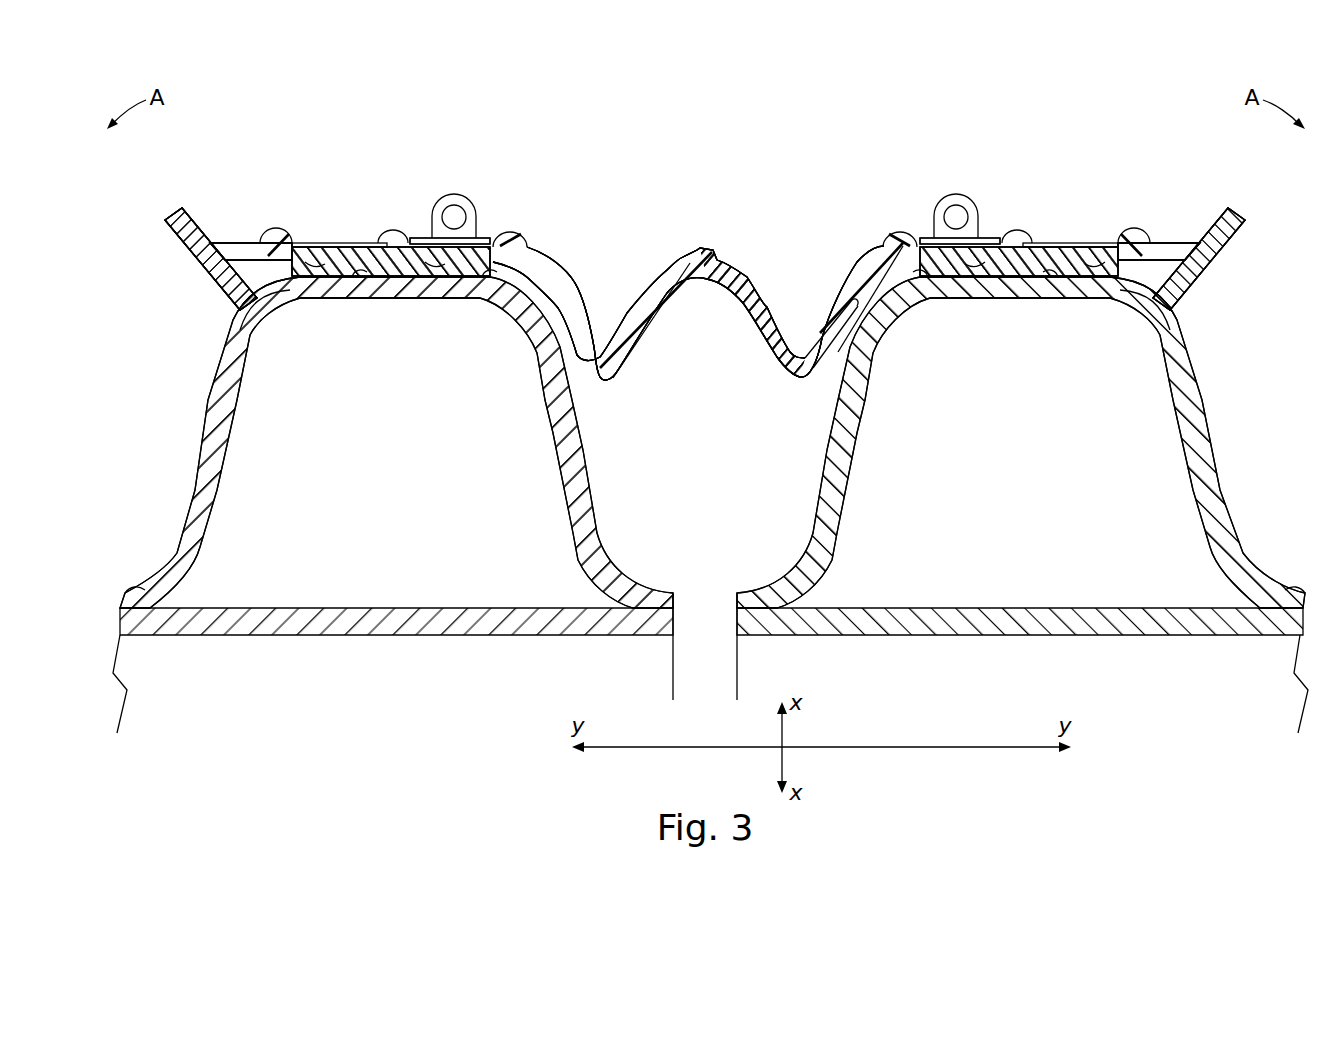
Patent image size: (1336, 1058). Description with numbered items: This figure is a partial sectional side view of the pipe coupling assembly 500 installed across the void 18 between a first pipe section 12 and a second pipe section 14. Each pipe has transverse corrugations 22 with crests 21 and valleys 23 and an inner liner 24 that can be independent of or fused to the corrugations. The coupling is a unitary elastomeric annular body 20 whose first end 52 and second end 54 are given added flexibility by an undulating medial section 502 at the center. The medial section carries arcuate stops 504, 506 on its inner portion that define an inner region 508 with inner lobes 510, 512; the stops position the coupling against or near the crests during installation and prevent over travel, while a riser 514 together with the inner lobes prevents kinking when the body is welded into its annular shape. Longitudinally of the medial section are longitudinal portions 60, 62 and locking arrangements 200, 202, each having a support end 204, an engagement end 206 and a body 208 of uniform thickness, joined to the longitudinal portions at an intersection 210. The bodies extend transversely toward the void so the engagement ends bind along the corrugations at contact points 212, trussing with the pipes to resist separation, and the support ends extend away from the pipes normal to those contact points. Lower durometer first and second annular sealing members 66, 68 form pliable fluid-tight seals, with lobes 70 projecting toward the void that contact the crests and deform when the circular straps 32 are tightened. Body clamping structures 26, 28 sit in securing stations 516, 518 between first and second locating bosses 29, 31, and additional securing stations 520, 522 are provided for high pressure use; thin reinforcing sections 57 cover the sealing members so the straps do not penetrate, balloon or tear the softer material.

The first pipe section 12 is at (158, 422).
The second pipe section 14 is at (1228, 505).
The void 18 is at (691, 695).
The annular body 20 is at (556, 266).
The crest 21 is at (300, 292).
The corrugation 22 is at (587, 441).
The valley 23 is at (162, 573).
The inner liner 24 is at (395, 632).
The body clamping structure 26 is at (454, 195).
The body clamping structure 28 is at (957, 195).
The first locating boss 29 is at (380, 236).
The second locating boss 31 is at (276, 229).
The circular strap 32 is at (490, 238).
The first end 52 is at (172, 218).
The second end 54 is at (214, 297).
The reinforcing section 57 is at (340, 247).
The longitudinal portion 60 is at (252, 243).
The longitudinal portion 62 is at (1160, 243).
The first annular sealing member 66 is at (396, 268).
The second annular sealing member 68 is at (1010, 268).
The lobe 70 is at (358, 282).
The locking arrangement 200 is at (136, 182).
The locking arrangement 202 is at (1274, 182).
The support end 204 is at (183, 206).
The engagement end 206 is at (252, 342).
The body 208 is at (178, 257).
The intersection 210 is at (217, 243).
The contact point 212 is at (258, 312).
The pipe coupling assembly 500 is at (1196, 182).
The undulating medial section 502 is at (760, 290).
The arcuate stop 504 is at (583, 317).
The arcuate stop 506 is at (826, 318).
The inner region 508 is at (688, 507).
The inner lobe 510 is at (600, 381).
The inner lobe 512 is at (806, 381).
The riser 514 is at (657, 286).
The securing station 516 is at (411, 238).
The securing station 518 is at (1003, 238).
The securing station 520 is at (300, 243).
The securing station 522 is at (1100, 243).